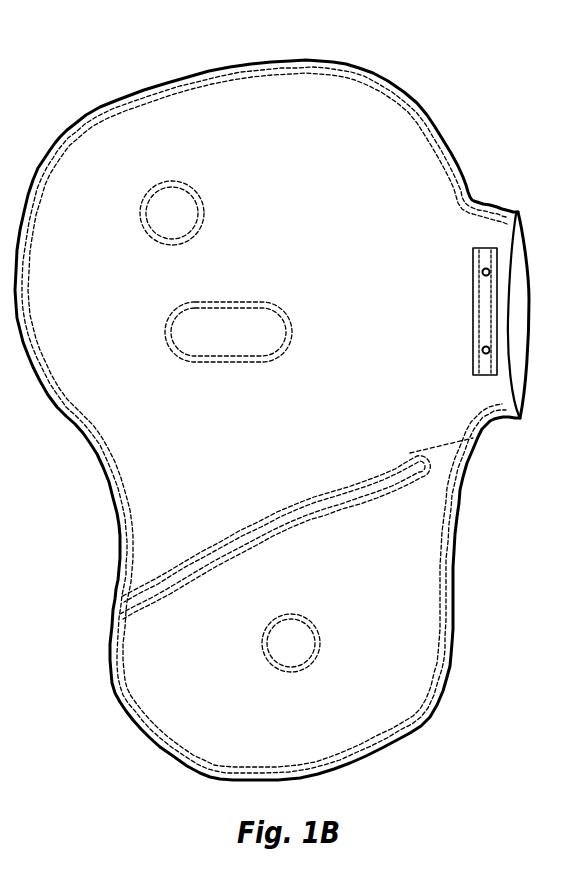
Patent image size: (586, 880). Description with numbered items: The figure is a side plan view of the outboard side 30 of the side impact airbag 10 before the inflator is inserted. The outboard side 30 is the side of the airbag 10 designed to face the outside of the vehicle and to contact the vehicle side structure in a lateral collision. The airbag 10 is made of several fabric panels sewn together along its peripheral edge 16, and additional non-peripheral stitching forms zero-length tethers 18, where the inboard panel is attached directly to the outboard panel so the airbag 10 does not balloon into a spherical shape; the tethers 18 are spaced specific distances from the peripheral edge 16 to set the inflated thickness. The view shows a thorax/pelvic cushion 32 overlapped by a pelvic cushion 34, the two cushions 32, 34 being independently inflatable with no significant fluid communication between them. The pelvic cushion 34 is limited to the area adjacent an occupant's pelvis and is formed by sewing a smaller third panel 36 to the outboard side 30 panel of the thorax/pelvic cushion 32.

The side impact airbag 10 is at (474, 125).
The peripheral edge 16 is at (167, 83).
The zero-length tethers 18 is at (187, 213).
The outboard side 30 is at (289, 450).
The thorax/pelvic cushion 32 is at (410, 238).
The pelvic cushion 34 is at (383, 602).
The third panel 36 is at (163, 620).